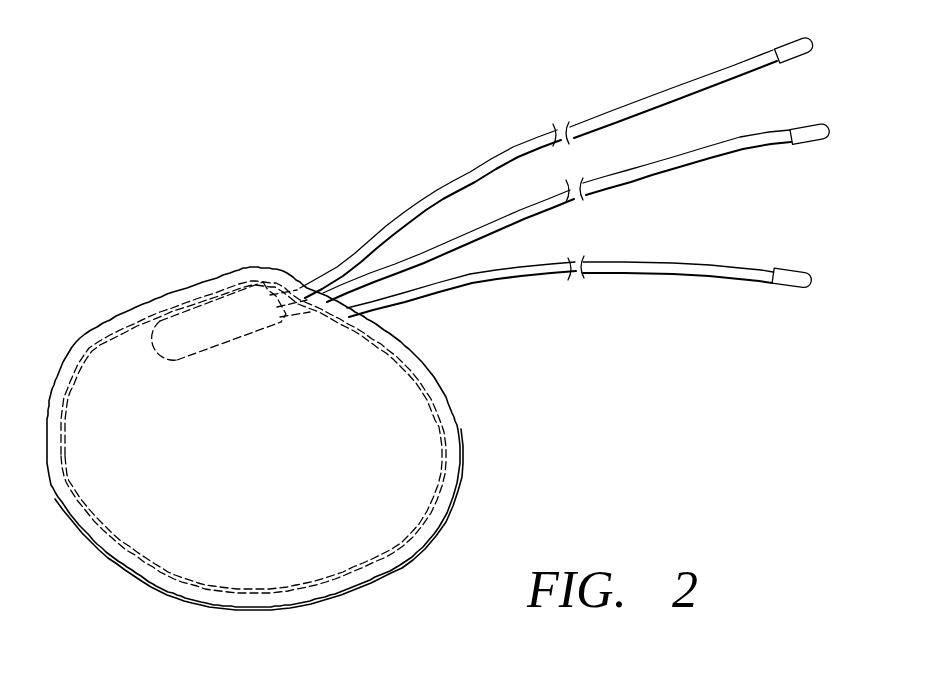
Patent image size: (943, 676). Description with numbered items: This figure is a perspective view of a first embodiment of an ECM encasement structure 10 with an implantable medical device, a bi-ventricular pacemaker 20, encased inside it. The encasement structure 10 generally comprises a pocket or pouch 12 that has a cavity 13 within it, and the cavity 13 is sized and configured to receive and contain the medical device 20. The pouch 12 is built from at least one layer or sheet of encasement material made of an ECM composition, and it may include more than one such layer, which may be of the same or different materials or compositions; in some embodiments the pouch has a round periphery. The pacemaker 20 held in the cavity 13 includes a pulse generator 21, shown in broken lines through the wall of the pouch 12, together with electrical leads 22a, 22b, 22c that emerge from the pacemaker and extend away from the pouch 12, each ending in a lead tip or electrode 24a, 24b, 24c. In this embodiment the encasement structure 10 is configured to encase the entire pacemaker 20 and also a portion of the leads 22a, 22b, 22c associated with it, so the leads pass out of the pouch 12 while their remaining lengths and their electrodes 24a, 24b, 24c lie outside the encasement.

The ECM encasement structure 10 is at (259, 256).
The pouch 12 is at (80, 342).
The cavity 13 is at (437, 400).
The bi-ventricular pacemaker 20 is at (453, 428).
The pulse generator 21 is at (400, 483).
The electrical lead 22a is at (453, 290).
The electrical lead 22b is at (510, 213).
The electrical lead 22c is at (431, 192).
The lead tip or electrode 24a is at (790, 294).
The lead tip or electrode 24b is at (808, 146).
The lead tip or electrode 24c is at (793, 63).